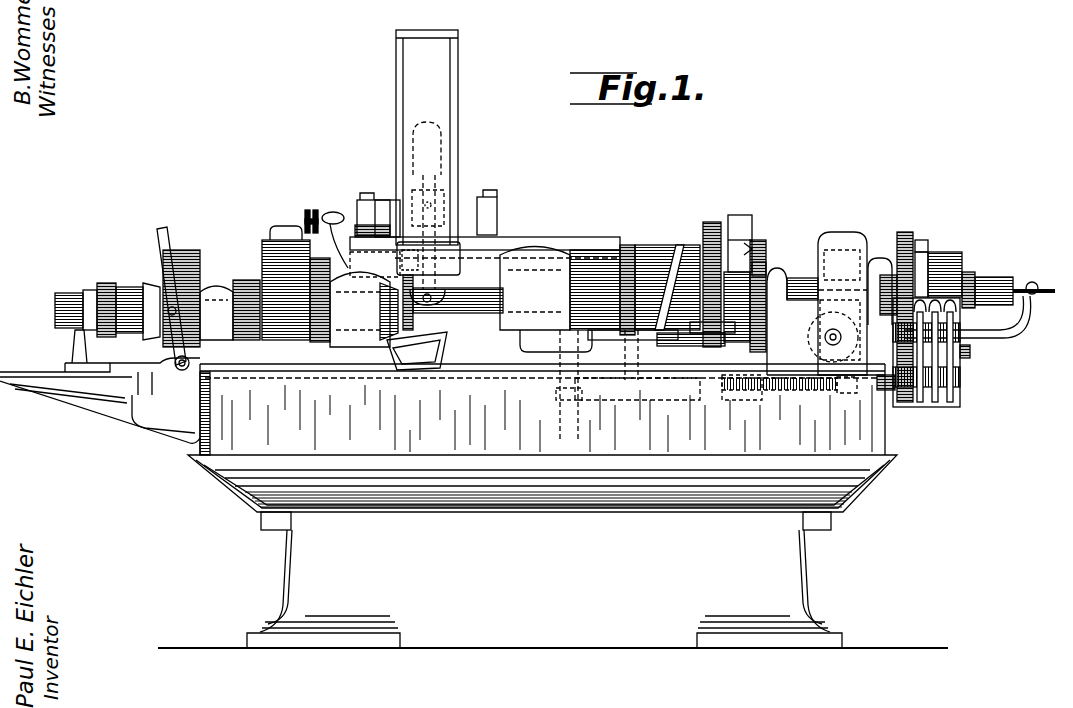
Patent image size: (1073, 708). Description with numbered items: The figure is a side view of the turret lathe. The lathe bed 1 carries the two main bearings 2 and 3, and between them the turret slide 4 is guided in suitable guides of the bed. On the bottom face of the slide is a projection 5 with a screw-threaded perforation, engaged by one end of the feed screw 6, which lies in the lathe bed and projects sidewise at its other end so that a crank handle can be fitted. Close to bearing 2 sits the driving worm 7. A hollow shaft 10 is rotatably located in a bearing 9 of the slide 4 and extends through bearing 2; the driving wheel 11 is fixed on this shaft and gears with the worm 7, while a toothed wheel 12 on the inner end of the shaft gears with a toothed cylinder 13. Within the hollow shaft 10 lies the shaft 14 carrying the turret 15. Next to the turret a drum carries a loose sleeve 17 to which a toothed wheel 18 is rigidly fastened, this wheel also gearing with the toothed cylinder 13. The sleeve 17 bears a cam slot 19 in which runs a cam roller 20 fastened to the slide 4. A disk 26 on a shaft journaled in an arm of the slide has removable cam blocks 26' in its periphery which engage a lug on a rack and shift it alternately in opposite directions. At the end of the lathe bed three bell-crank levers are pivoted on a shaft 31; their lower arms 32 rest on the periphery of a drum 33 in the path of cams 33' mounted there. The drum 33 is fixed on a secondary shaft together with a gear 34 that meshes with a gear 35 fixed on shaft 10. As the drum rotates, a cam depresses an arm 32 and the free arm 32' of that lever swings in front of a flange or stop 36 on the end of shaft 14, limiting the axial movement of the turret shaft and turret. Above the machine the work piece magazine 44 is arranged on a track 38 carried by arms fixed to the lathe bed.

The lathe bed 1 is at (448, 430).
The main bearing 2 is at (870, 260).
The main bearing 3 is at (360, 309).
The turret slide 4 is at (633, 348).
The projection 5 is at (756, 384).
The feed screw 6 is at (812, 384).
The driving worm 7 is at (833, 337).
The bearing 9 is at (786, 276).
The hollow shaft 10 is at (802, 300).
The driving wheel 11 is at (833, 232).
The toothed wheel 12 is at (764, 250).
The toothed cylinder 13 is at (716, 343).
The shaft 14 is at (762, 270).
The turret 15 is at (598, 256).
The loose sleeve 17 is at (650, 252).
The toothed wheel 18 is at (710, 242).
The cam slot 19 is at (680, 245).
The cam roller 20 is at (652, 340).
The disk 26 is at (735, 269).
The cam block 26' is at (766, 228).
The shaft 31 is at (972, 352).
The lower arm of bell-crank lever 32 is at (939, 352).
The free arm of bell-crank lever 32' is at (968, 317).
The drum 33 is at (956, 268).
The cam 33' is at (942, 235).
The gear 34 is at (906, 234).
The gear 35 is at (892, 274).
The flange or stop 36 is at (986, 277).
The track 38 is at (372, 200).
The work piece magazine 44 is at (456, 128).